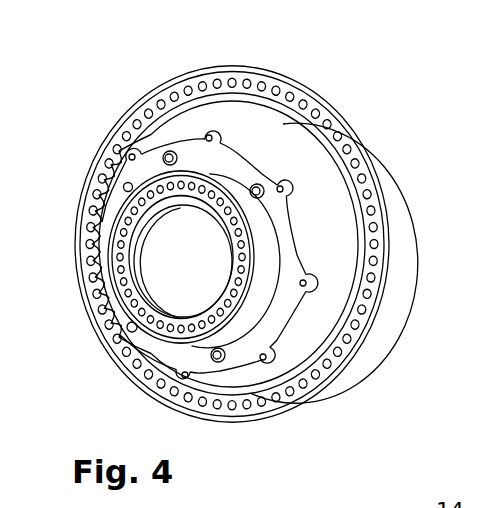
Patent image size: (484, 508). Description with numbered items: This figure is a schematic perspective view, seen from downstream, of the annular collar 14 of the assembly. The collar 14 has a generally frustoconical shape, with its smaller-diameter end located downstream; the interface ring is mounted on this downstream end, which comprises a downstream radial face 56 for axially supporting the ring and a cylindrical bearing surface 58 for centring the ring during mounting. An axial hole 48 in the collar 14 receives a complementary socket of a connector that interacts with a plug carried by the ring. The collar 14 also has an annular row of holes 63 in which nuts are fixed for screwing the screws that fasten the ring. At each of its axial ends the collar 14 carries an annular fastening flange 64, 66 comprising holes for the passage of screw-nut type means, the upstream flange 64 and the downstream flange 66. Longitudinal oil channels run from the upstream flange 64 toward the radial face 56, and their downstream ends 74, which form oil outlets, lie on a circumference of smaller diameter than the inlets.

The annular collar 14 is at (344, 101).
The axial hole 48 is at (124, 186).
The downstream radial face 56 is at (281, 241).
The cylindrical bearing surface 58 is at (262, 229).
The holes 63 is at (211, 135).
The upstream annular fastening flange 64 is at (386, 310).
The downstream annular fastening flange 66 is at (203, 318).
The downstream ends of the channels 74 is at (128, 329).